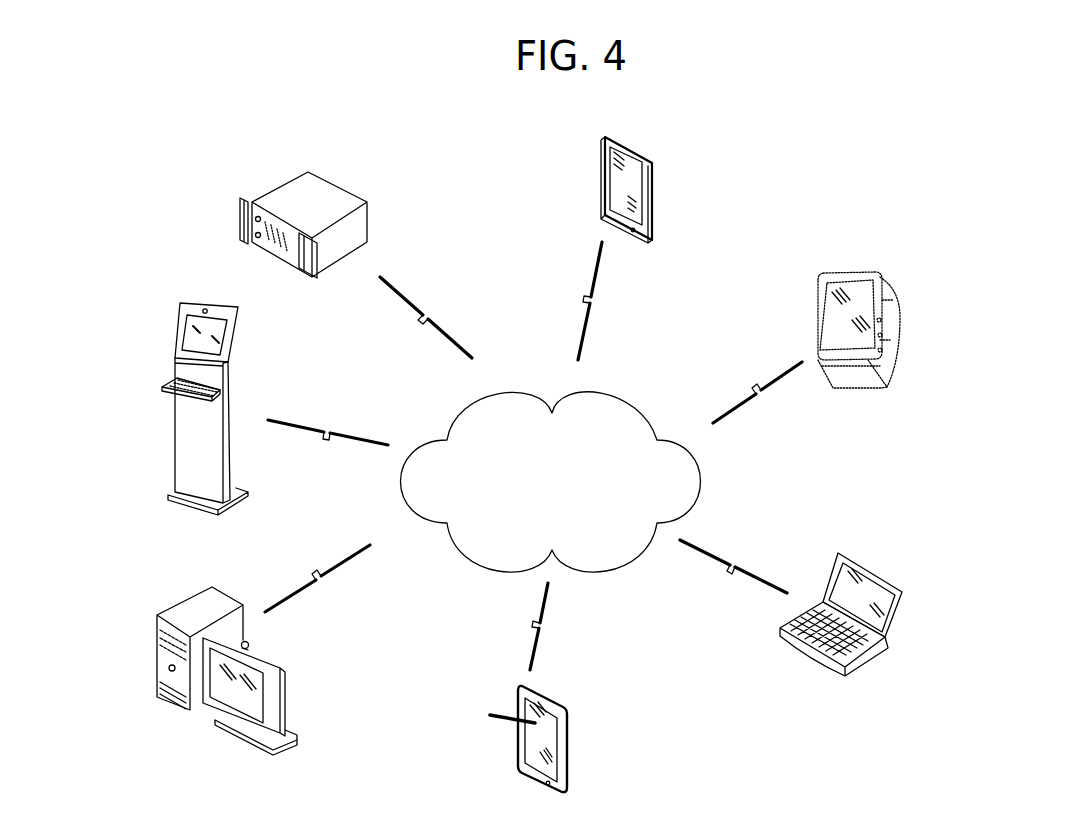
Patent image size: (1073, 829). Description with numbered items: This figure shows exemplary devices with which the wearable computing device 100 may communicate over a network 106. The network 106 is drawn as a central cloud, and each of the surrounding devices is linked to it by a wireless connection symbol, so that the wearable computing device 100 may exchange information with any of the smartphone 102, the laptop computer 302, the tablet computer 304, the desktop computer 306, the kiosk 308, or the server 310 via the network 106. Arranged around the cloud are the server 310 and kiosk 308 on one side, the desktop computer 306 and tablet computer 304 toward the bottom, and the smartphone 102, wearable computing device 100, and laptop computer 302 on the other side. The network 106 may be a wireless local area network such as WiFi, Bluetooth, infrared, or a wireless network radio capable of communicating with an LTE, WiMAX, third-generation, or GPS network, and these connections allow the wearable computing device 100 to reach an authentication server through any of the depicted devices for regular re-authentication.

The wearable computing device 100 is at (893, 302).
The smartphone 102 is at (650, 158).
The network 106 is at (620, 400).
The laptop computer 302 is at (905, 600).
The tablet computer 304 is at (563, 741).
The desktop computer 306 is at (157, 627).
The kiosk 308 is at (175, 372).
The server 310 is at (283, 193).